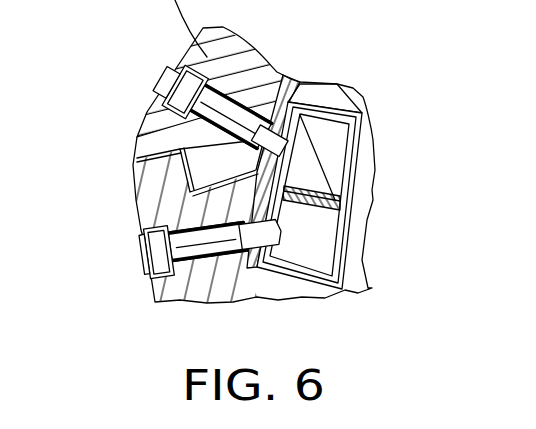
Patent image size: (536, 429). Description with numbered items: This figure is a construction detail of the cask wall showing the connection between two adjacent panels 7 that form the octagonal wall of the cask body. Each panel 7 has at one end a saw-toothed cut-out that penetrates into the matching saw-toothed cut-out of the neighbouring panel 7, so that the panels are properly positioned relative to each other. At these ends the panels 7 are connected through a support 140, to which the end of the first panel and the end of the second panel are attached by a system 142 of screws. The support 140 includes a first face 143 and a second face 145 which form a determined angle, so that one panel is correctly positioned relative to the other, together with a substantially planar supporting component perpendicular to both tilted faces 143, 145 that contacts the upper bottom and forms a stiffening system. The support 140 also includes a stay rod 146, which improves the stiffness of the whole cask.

The panel 7 is at (150, 216).
The support 140 is at (348, 160).
The system of screws 142 is at (164, 206).
The first face 143 is at (280, 99).
The second face 145 is at (257, 268).
The stay rod 146 is at (296, 206).